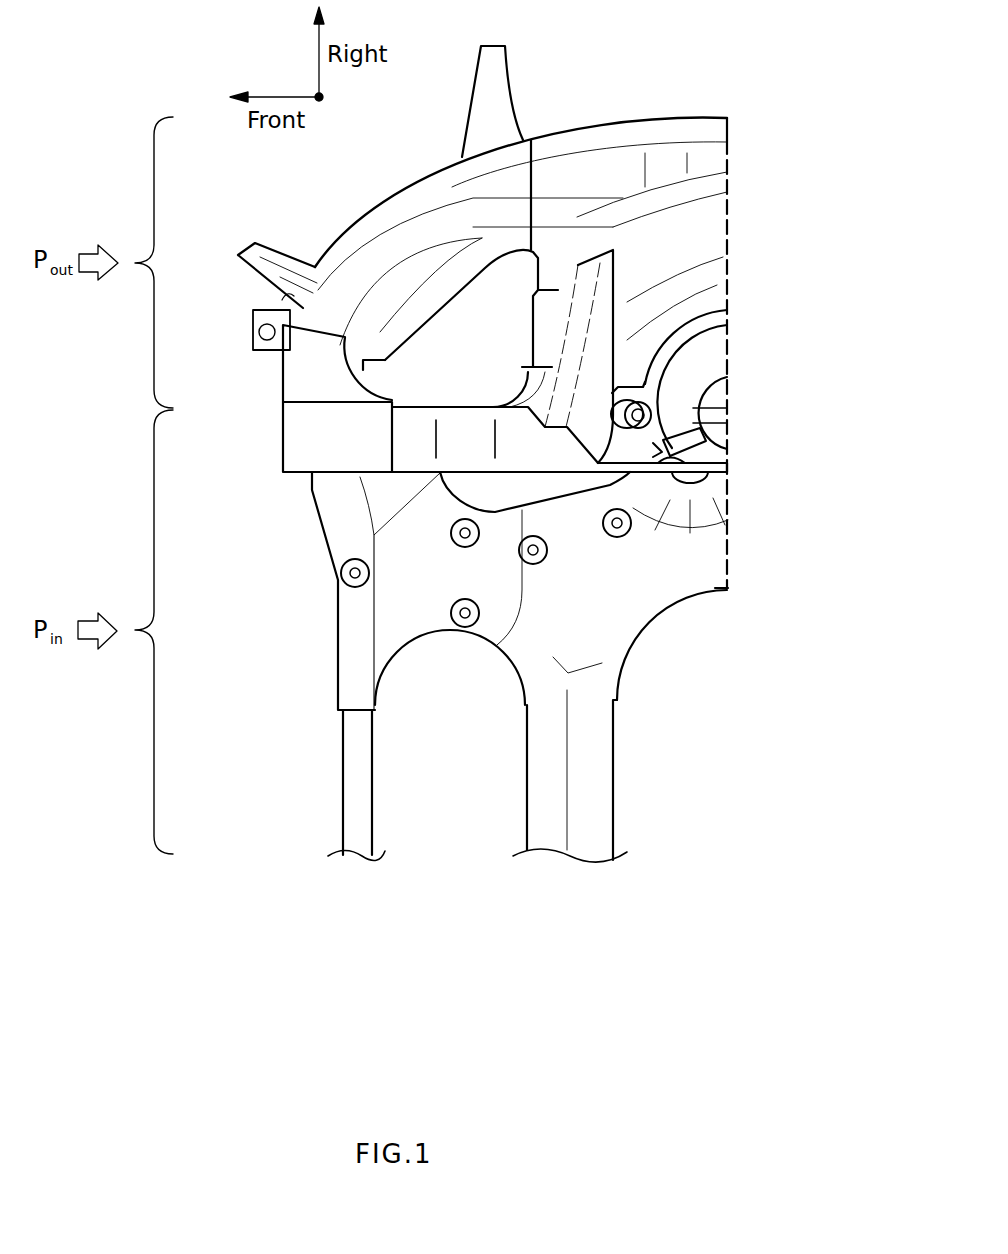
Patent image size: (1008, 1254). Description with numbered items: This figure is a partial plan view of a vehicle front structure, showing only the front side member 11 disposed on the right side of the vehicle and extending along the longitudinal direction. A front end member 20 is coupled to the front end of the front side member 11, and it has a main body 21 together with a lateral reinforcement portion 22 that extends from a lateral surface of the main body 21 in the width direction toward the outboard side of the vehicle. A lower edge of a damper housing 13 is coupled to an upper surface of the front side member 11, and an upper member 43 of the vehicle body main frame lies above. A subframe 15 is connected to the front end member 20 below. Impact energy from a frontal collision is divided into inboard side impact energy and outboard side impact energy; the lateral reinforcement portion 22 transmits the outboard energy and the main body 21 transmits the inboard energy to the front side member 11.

The front side member 11 is at (466, 422).
The damper housing 13 is at (707, 228).
The subframe 15 is at (350, 642).
The front end member 20 is at (311, 427).
The main body 21 is at (293, 465).
The lateral reinforcement portion 22 is at (380, 387).
The upper member 43 is at (418, 197).